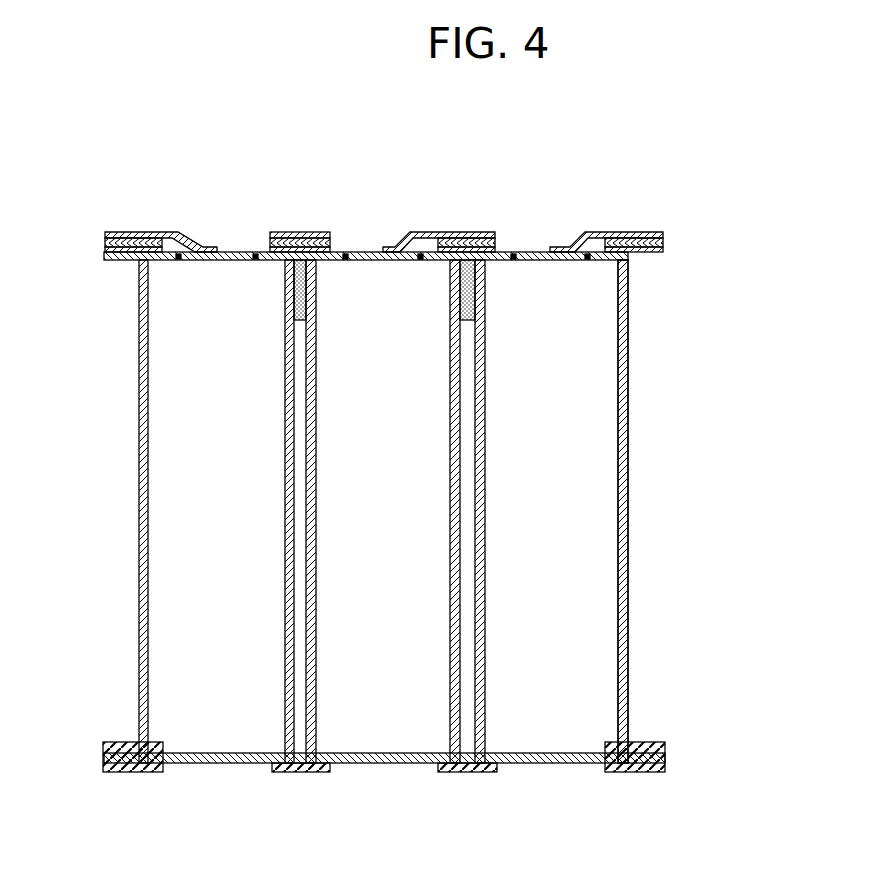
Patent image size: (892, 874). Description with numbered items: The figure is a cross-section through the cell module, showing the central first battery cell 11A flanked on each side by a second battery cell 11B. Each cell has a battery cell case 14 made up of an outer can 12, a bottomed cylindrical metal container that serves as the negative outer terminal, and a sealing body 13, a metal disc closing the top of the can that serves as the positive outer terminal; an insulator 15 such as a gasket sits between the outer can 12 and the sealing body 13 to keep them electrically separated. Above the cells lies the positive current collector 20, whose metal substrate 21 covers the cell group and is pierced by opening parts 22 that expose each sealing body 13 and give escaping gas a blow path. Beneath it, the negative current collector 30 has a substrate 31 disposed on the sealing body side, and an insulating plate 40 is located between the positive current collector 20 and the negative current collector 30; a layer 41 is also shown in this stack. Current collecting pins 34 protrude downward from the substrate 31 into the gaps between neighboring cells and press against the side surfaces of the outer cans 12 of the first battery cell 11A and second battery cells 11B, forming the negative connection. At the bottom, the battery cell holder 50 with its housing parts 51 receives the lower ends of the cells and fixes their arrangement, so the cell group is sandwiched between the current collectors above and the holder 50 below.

The first battery cell 11A is at (407, 502).
The second battery cell 11B is at (235, 502).
The outer can 12 is at (432, 557).
The sealing body 13 is at (363, 252).
The battery cell case 14 is at (632, 573).
The insulator 15 is at (583, 262).
The positive current collector 20 is at (633, 232).
The substrate 21 is at (330, 236).
The opening part 22 is at (395, 247).
The negative current collector 30 is at (663, 250).
The substrate 31 is at (497, 250).
The current collecting pin 34 is at (467, 305).
The insulating plate 40 is at (663, 242).
The conductive layer 41 is at (497, 242).
The battery cell holder 50 is at (298, 772).
The housing part 51 is at (142, 748).